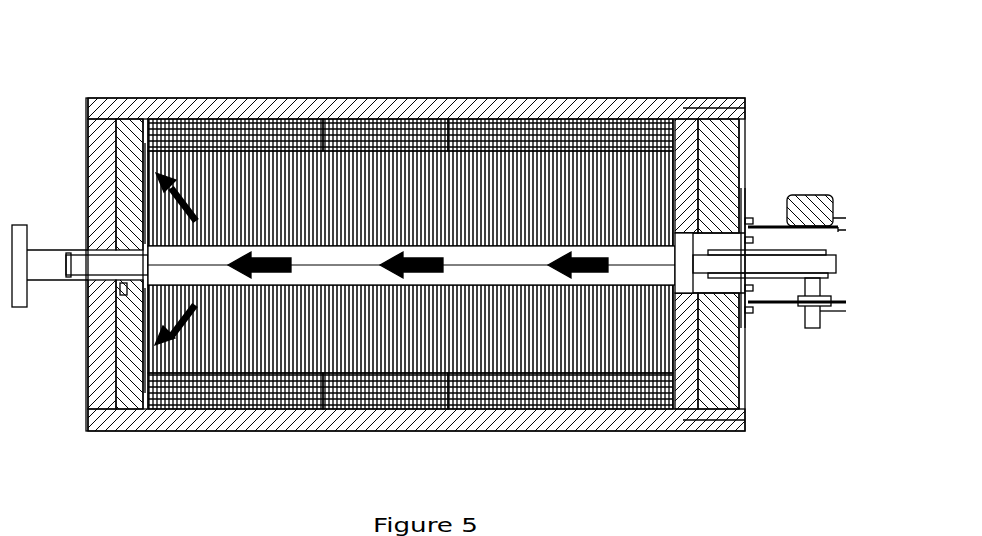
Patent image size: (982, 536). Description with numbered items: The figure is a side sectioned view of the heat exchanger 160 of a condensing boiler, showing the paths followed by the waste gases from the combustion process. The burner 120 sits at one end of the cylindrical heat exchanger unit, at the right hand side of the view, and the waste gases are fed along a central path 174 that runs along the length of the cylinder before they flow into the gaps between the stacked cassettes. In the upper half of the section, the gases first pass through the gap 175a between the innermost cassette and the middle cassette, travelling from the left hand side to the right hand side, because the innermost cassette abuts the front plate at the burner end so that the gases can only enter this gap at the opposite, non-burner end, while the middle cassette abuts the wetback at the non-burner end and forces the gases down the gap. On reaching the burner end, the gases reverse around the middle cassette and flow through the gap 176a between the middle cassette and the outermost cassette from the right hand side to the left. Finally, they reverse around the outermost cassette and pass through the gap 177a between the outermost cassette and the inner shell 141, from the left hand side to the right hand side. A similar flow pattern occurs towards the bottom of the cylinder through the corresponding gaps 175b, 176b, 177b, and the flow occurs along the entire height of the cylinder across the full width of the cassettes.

The burner 120 is at (813, 259).
The inner shell 141 is at (625, 98).
The heat exchanger 160 is at (643, 347).
The central path 174 is at (590, 262).
The gap 175a is at (270, 118).
The gap 175b is at (228, 398).
The gap 176a is at (370, 118).
The gap 176b is at (368, 398).
The gap 177a is at (508, 118).
The gap 177b is at (510, 398).